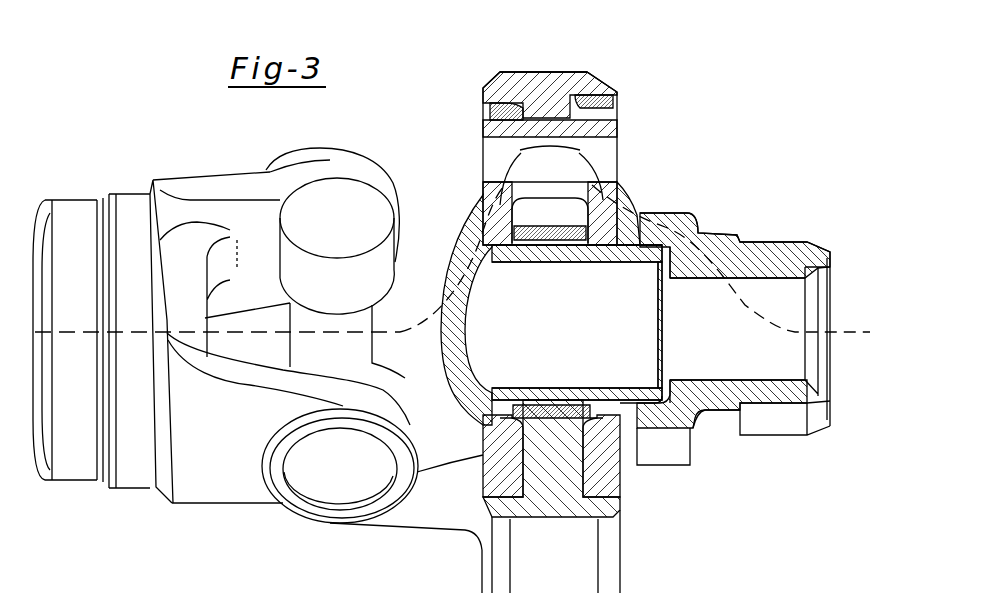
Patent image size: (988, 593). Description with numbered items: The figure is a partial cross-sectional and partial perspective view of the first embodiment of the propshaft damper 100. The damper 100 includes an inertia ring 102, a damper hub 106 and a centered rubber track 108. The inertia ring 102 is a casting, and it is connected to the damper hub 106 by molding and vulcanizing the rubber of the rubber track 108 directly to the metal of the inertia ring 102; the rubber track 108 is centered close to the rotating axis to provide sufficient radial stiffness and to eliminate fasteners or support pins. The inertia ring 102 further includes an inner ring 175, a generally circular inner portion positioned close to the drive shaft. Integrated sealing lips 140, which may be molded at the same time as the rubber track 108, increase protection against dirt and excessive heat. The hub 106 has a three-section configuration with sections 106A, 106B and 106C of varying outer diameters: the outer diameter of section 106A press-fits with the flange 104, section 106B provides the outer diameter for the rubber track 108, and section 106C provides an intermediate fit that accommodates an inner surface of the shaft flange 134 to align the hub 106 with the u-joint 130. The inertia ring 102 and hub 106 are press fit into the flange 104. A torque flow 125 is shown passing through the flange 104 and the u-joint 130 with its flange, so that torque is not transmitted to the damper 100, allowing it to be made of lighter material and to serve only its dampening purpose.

The propshaft damper 100 is at (98, 503).
The inertia ring 102 is at (588, 78).
The flange 104 is at (758, 221).
The damper hub 106 is at (590, 337).
The hub section 106A is at (642, 212).
The hub section 106B is at (543, 243).
The hub section 106C is at (545, 249).
The rubber track 108 is at (578, 205).
The torque flow 125 is at (804, 332).
The u-joint 130 is at (222, 480).
The shaft flange 134 is at (490, 462).
The sealing lips 140 is at (495, 116).
The inner ring 175 is at (548, 72).